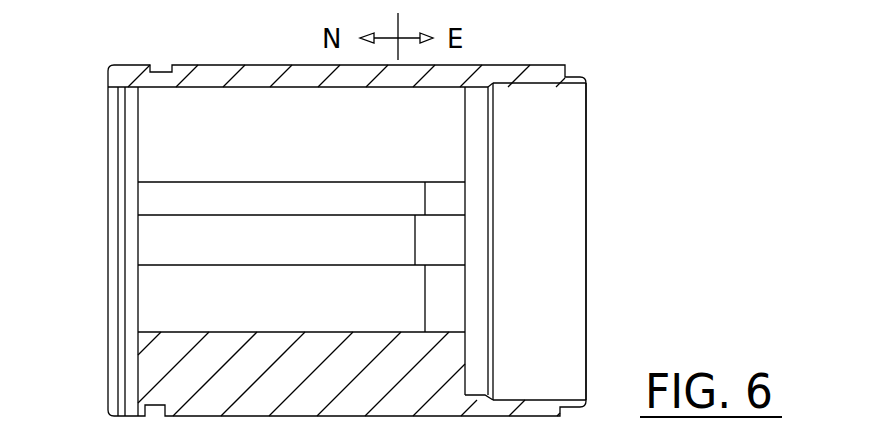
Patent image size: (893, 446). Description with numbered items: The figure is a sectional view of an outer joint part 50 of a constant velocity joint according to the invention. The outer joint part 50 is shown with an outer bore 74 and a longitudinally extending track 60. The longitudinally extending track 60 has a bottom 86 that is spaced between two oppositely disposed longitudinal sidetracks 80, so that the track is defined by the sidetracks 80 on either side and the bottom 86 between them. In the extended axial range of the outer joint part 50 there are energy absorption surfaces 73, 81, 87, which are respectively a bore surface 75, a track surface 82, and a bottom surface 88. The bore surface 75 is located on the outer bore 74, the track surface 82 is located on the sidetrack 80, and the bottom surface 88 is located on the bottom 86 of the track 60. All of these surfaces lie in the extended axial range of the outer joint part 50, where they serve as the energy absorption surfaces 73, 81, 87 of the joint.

The outer joint part 50 is at (252, 72).
The longitudinally extending track 60 is at (93, 222).
The energy absorption surface 73 is at (485, 195).
The outer bore 74 is at (303, 197).
The bore surface 75 is at (443, 187).
The longitudinal sidetracks 80 is at (233, 230).
The energy absorption surface 81 is at (485, 240).
The track surface 82 is at (428, 240).
The bottom 86 is at (175, 280).
The energy absorption surface 87 is at (485, 298).
The bottom surface 88 is at (437, 295).